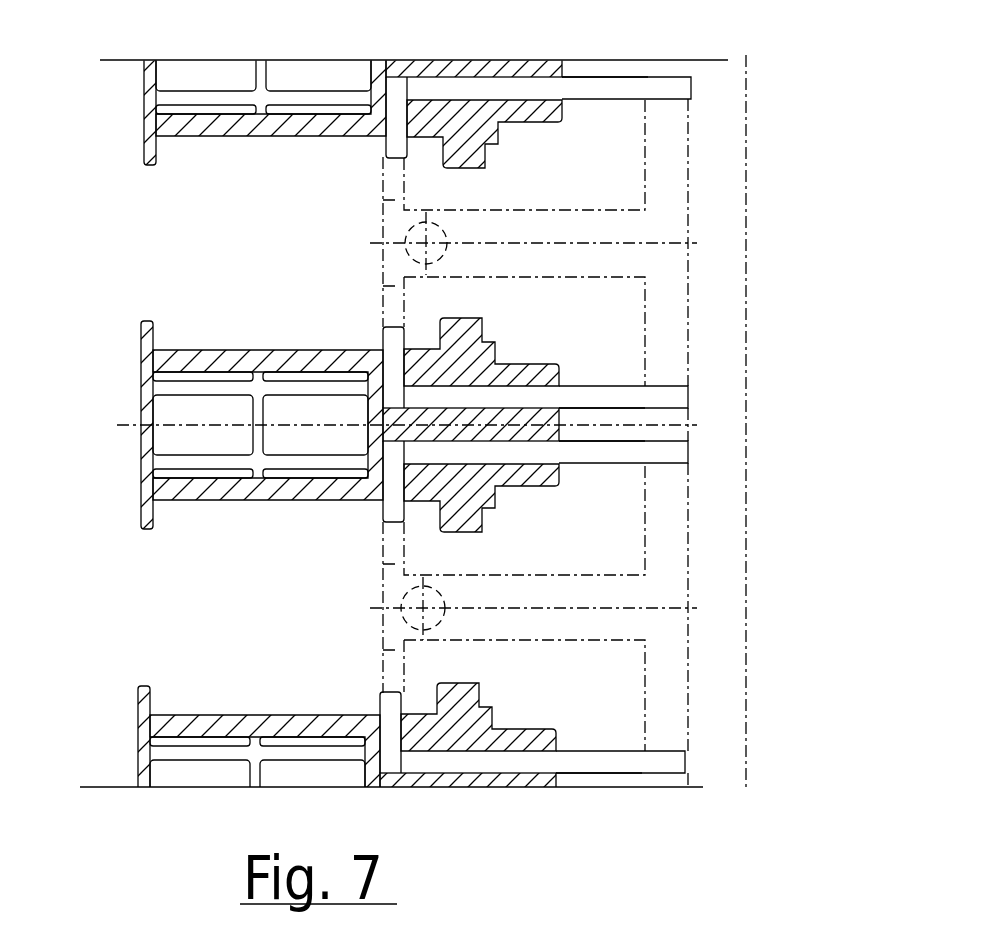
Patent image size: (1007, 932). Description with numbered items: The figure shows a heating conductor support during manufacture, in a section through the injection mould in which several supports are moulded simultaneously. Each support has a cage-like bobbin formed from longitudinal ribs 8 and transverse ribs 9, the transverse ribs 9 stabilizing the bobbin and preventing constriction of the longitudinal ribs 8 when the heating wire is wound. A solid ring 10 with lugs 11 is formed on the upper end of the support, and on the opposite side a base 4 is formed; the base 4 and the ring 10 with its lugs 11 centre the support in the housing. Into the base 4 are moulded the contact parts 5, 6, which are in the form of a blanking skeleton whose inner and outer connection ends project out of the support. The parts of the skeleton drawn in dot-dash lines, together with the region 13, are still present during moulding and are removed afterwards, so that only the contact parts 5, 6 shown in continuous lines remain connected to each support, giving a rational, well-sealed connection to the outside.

The base 4 is at (447, 362).
The contact part 5 is at (391, 338).
The contact part 6 is at (665, 458).
The longitudinal ribs 8 is at (172, 363).
The transverse ribs 9 is at (258, 414).
The ring 10 is at (139, 417).
The lugs 11 is at (139, 333).
The receiving chamber 13 is at (660, 512).